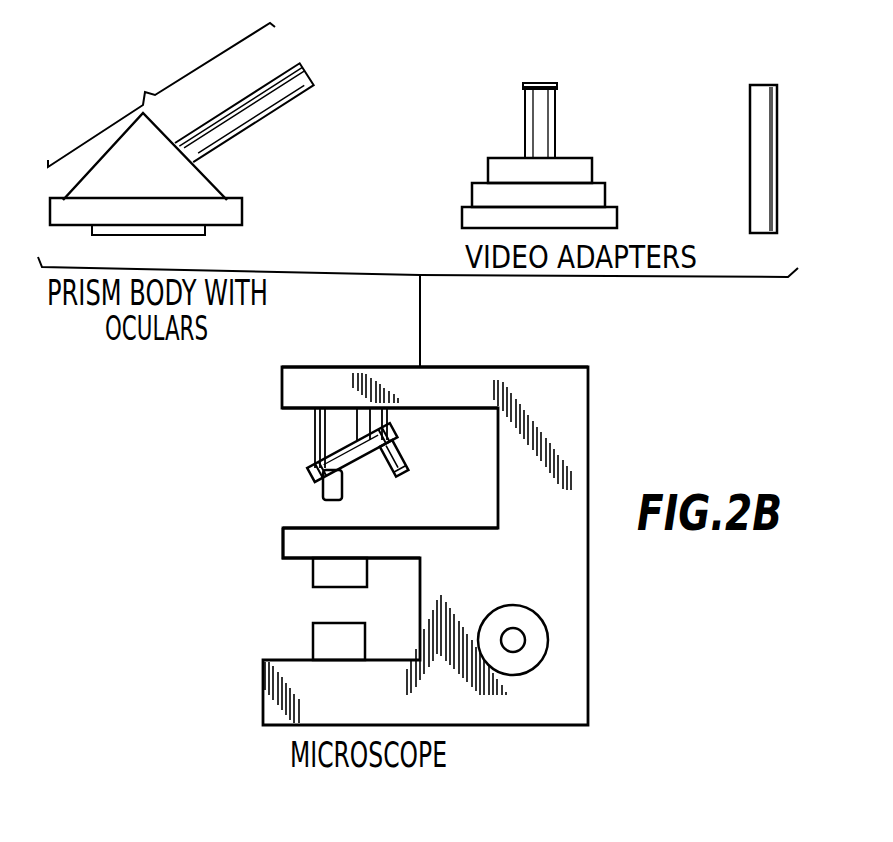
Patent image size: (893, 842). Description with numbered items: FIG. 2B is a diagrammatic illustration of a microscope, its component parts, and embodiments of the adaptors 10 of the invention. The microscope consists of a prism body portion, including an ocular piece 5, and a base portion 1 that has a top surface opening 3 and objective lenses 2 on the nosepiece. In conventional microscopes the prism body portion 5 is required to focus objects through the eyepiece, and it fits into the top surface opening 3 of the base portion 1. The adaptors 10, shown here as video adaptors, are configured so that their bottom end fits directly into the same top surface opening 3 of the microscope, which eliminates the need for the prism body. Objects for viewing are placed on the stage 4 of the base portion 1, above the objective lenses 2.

The base portion 1 is at (557, 573).
The objective lenses 2 is at (429, 427).
The top surface opening 3 is at (372, 358).
The stage 4 is at (271, 557).
The prism body portion including ocular piece 5 is at (181, 129).
The adaptors 10 is at (652, 128).